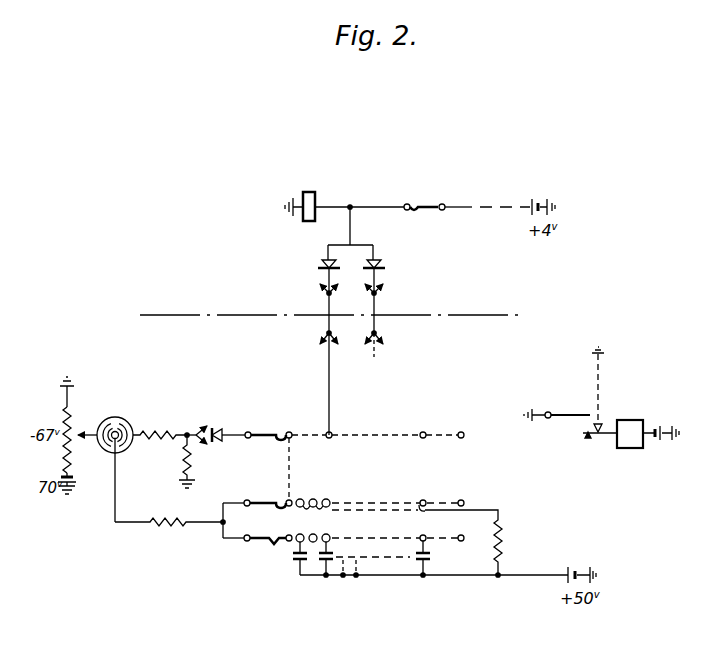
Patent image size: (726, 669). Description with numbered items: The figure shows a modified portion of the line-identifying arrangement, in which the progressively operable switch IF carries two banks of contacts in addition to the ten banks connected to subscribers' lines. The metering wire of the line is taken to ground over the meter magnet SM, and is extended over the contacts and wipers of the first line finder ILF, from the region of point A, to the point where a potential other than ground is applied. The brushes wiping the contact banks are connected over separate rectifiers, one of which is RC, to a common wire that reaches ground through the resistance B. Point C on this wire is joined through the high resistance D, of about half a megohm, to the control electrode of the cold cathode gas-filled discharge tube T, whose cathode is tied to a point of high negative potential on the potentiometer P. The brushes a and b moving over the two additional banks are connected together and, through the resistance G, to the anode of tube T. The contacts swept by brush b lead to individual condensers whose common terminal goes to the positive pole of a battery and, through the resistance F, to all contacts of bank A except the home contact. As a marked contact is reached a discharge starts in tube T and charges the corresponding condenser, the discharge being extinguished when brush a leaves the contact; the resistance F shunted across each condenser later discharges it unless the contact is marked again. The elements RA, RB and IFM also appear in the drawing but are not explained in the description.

The meter magnet SM is at (303, 194).
The bank A is at (350, 211).
The first line finder ILF is at (424, 192).
The rectifier A RA is at (317, 340).
The rectifier B RB is at (384, 301).
The potentiometer P is at (77, 435).
The cold cathode gas-filled discharge tube T is at (115, 455).
The high resistance D is at (160, 422).
The point C is at (188, 421).
The resistance B is at (193, 461).
The rectifier RC is at (244, 423).
The resistance G is at (169, 510).
The brush a is at (257, 493).
The brush b is at (257, 528).
The switch IF is at (385, 517).
The resistance F is at (463, 542).
The relay magnet IFM is at (637, 426).